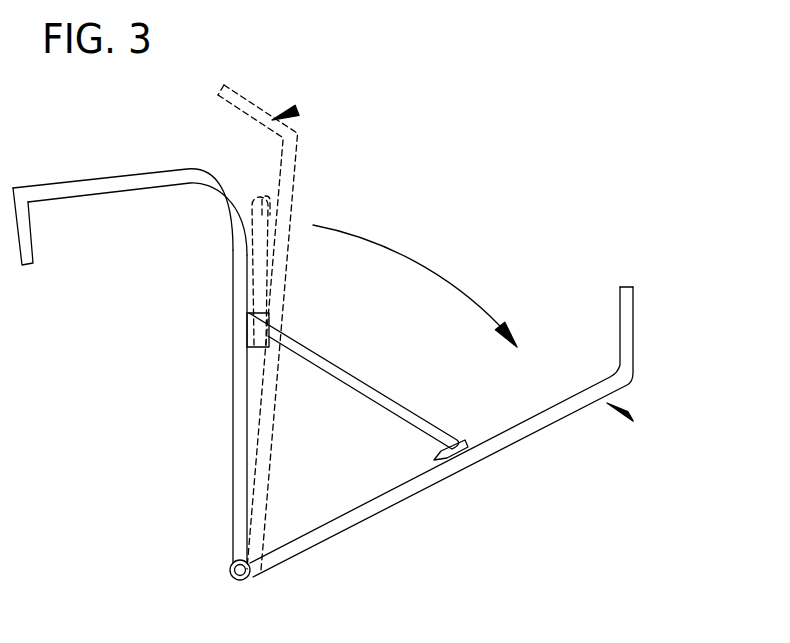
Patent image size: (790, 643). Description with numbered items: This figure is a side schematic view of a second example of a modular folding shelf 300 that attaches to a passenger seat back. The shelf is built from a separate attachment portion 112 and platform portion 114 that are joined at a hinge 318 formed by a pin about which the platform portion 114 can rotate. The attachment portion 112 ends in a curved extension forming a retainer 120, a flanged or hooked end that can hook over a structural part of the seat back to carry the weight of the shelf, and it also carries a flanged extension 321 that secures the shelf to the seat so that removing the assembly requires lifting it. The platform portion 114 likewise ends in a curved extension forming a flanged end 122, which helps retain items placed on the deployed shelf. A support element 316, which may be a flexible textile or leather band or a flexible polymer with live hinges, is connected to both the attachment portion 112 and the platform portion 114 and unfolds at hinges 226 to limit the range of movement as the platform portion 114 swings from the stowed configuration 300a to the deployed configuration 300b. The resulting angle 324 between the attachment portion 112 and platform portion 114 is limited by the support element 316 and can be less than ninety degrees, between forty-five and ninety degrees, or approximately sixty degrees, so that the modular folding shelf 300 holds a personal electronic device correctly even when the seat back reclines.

The modular folding shelf 300 is at (553, 156).
The stowed configuration 300a is at (297, 110).
The deployed configuration 300b is at (630, 416).
The attachment portion 112 is at (232, 492).
The platform portion 114 is at (507, 445).
The retainer 120 is at (90, 175).
The flanged end 122 is at (633, 290).
The hinges 226 is at (248, 313).
The support element 316 is at (390, 393).
The hinge 318 is at (232, 570).
The flanged extension 321 is at (35, 253).
The angle 324 is at (418, 262).